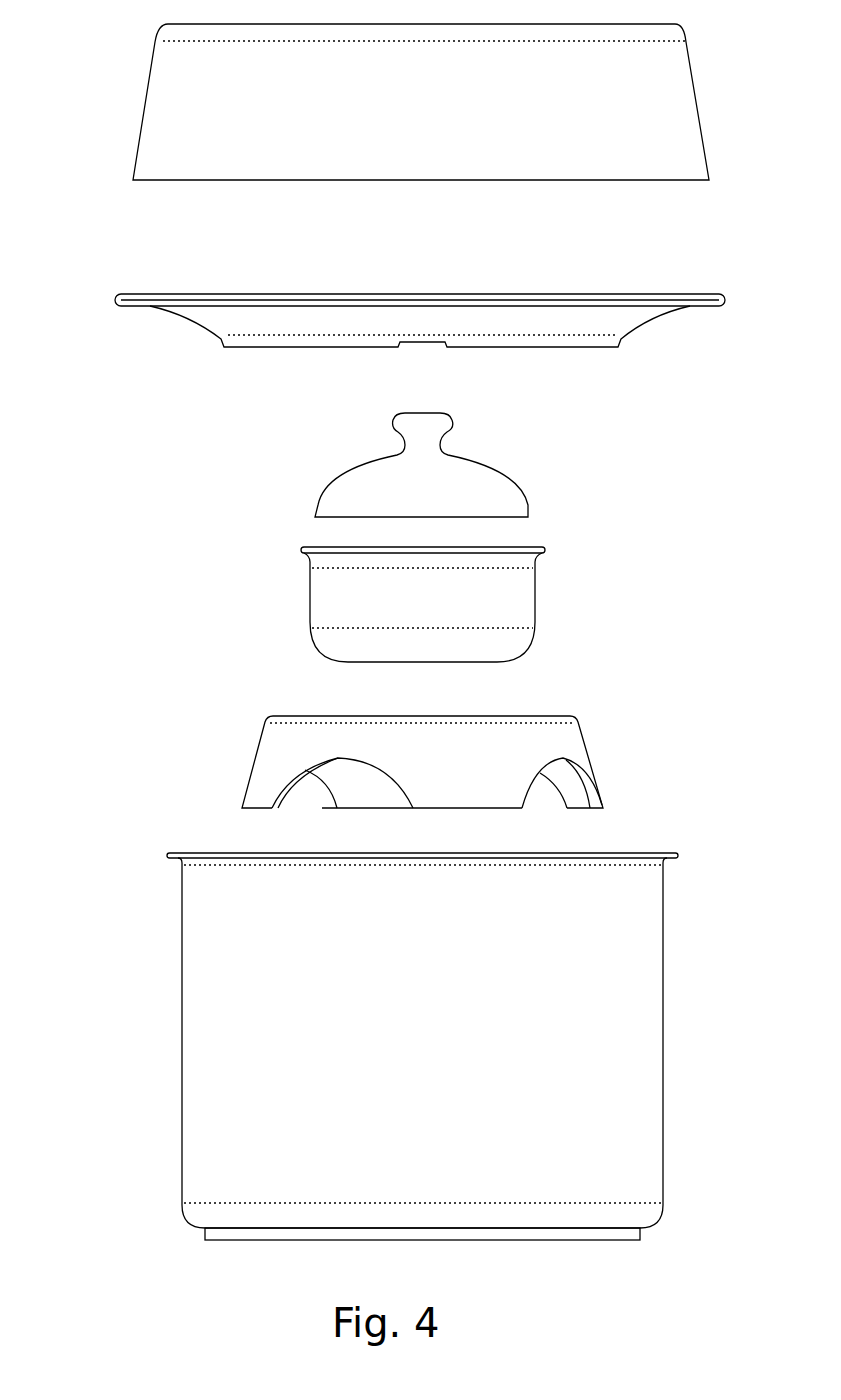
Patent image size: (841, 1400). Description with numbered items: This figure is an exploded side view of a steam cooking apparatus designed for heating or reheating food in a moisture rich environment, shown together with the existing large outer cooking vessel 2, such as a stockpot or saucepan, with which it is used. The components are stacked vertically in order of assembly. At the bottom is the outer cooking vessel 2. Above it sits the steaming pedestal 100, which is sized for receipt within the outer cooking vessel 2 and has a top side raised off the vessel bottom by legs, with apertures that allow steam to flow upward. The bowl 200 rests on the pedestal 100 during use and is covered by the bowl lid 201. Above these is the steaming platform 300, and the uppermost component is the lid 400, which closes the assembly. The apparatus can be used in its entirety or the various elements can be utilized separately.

The lid 400 is at (176, 80).
The steaming platform 300 is at (218, 318).
The bowl lid 201 is at (340, 500).
The bowl 200 is at (325, 605).
The steaming pedestal 100 is at (272, 757).
The outer cooking vessel 2 is at (211, 1046).